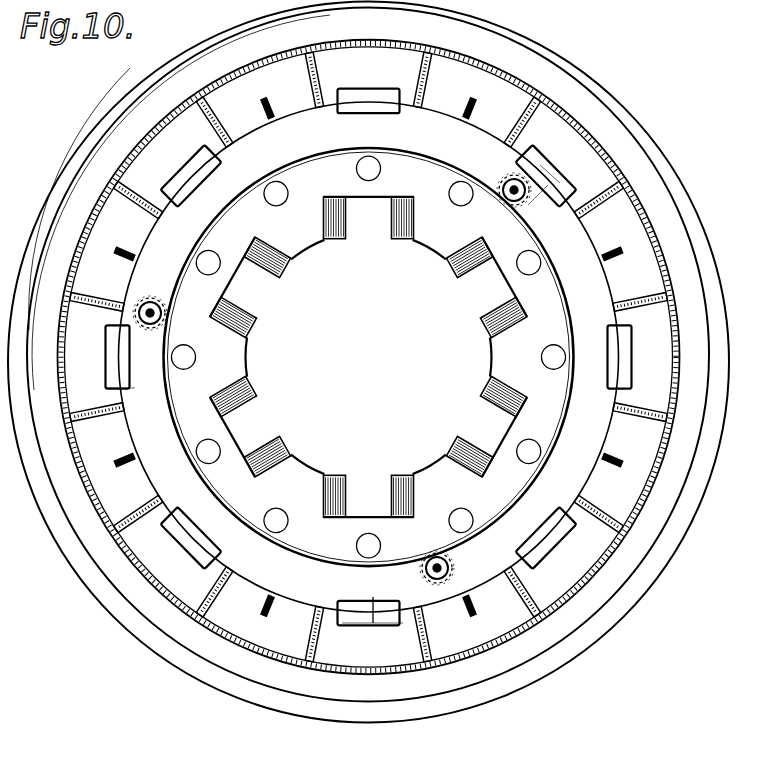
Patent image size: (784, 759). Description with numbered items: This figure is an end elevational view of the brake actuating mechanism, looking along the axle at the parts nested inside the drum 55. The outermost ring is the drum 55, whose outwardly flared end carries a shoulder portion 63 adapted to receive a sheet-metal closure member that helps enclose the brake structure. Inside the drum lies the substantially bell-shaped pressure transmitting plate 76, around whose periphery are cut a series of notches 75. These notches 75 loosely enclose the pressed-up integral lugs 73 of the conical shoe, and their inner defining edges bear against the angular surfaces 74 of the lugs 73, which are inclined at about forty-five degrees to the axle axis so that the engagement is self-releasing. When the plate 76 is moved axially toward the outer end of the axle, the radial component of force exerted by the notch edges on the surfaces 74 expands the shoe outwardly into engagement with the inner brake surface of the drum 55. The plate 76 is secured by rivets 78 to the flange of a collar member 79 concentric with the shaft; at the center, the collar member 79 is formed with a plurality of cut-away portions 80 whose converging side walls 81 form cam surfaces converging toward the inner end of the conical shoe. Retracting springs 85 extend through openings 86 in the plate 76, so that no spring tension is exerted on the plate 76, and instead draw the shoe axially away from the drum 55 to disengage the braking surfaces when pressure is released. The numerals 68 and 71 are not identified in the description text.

The drum 55 is at (168, 628).
The shoulder portion 63 is at (203, 675).
The lugs 68 is at (262, 114).
The spokes 71 is at (313, 74).
The lugs 73 is at (525, 153).
The angular surfaces 74 is at (555, 192).
The notches 75 is at (546, 206).
The pressure transmitting plate 76 is at (600, 446).
The rivets 78 is at (285, 192).
The collar member 79 is at (238, 365).
The cut-away portions 80 is at (265, 292).
The converging side walls 81 is at (323, 223).
The retracting springs 85 is at (507, 182).
The openings 86 is at (515, 200).